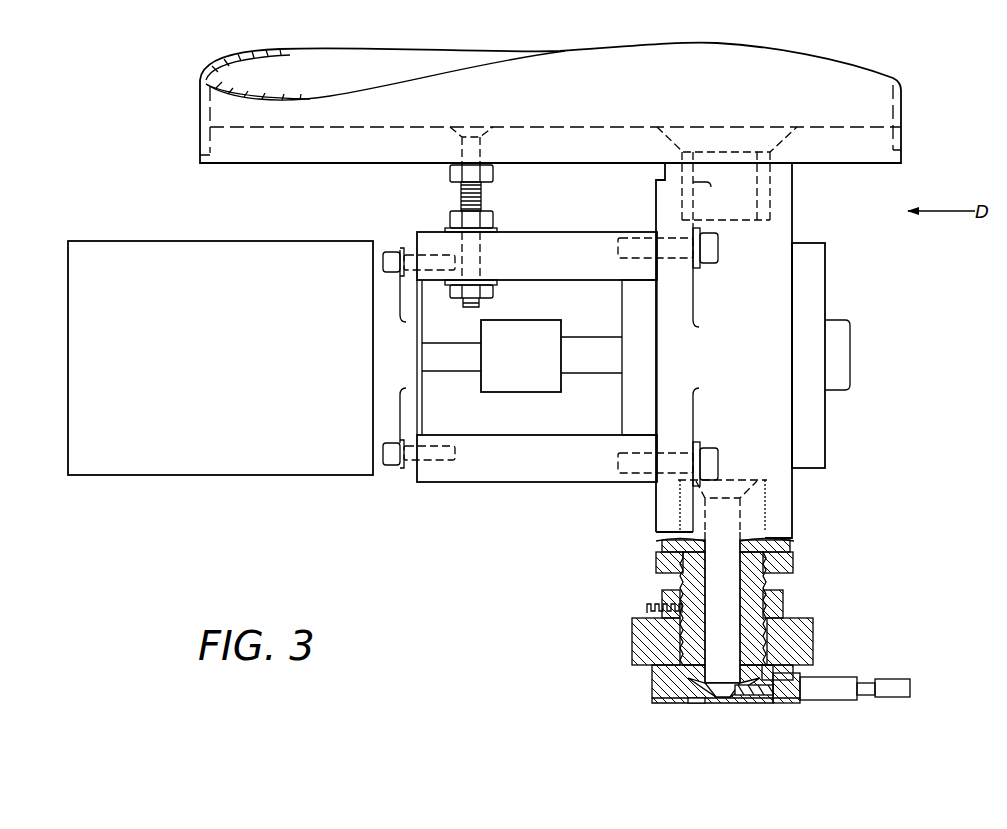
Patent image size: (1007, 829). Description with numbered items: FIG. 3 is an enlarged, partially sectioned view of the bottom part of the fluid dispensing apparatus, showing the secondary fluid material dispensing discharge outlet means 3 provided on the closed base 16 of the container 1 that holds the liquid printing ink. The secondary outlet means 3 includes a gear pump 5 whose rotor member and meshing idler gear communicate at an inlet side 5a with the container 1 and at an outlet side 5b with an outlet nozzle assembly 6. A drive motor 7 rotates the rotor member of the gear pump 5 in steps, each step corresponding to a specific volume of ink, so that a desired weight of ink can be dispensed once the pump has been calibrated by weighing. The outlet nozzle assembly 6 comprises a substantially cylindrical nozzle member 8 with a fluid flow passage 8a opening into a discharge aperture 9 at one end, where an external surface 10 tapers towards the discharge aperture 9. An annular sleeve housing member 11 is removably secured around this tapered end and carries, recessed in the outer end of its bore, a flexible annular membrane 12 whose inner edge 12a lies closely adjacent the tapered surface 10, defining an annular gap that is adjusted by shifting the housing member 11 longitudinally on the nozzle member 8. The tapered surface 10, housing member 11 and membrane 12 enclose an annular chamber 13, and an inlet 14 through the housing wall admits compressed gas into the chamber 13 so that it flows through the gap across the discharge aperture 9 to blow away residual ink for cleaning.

The container 1 is at (858, 65).
The secondary fluid material dispensing discharge outlet means 3 is at (866, 474).
The gear pump 5 is at (765, 316).
The inlet side 5a is at (770, 190).
The outlet side 5b is at (757, 490).
The outlet nozzle assembly 6 is at (795, 611).
The drive motor 7 is at (128, 248).
The nozzle member 8 is at (752, 607).
The fluid flow passage 8a is at (712, 575).
The discharge aperture 9 is at (723, 688).
The external surface 10 is at (772, 690).
The housing member 11 is at (650, 690).
The annular membrane 12 is at (697, 705).
The inner edge 12a is at (737, 705).
The annular chamber 13 is at (662, 705).
The inlet 14 is at (790, 700).
The closed base 16 is at (277, 165).